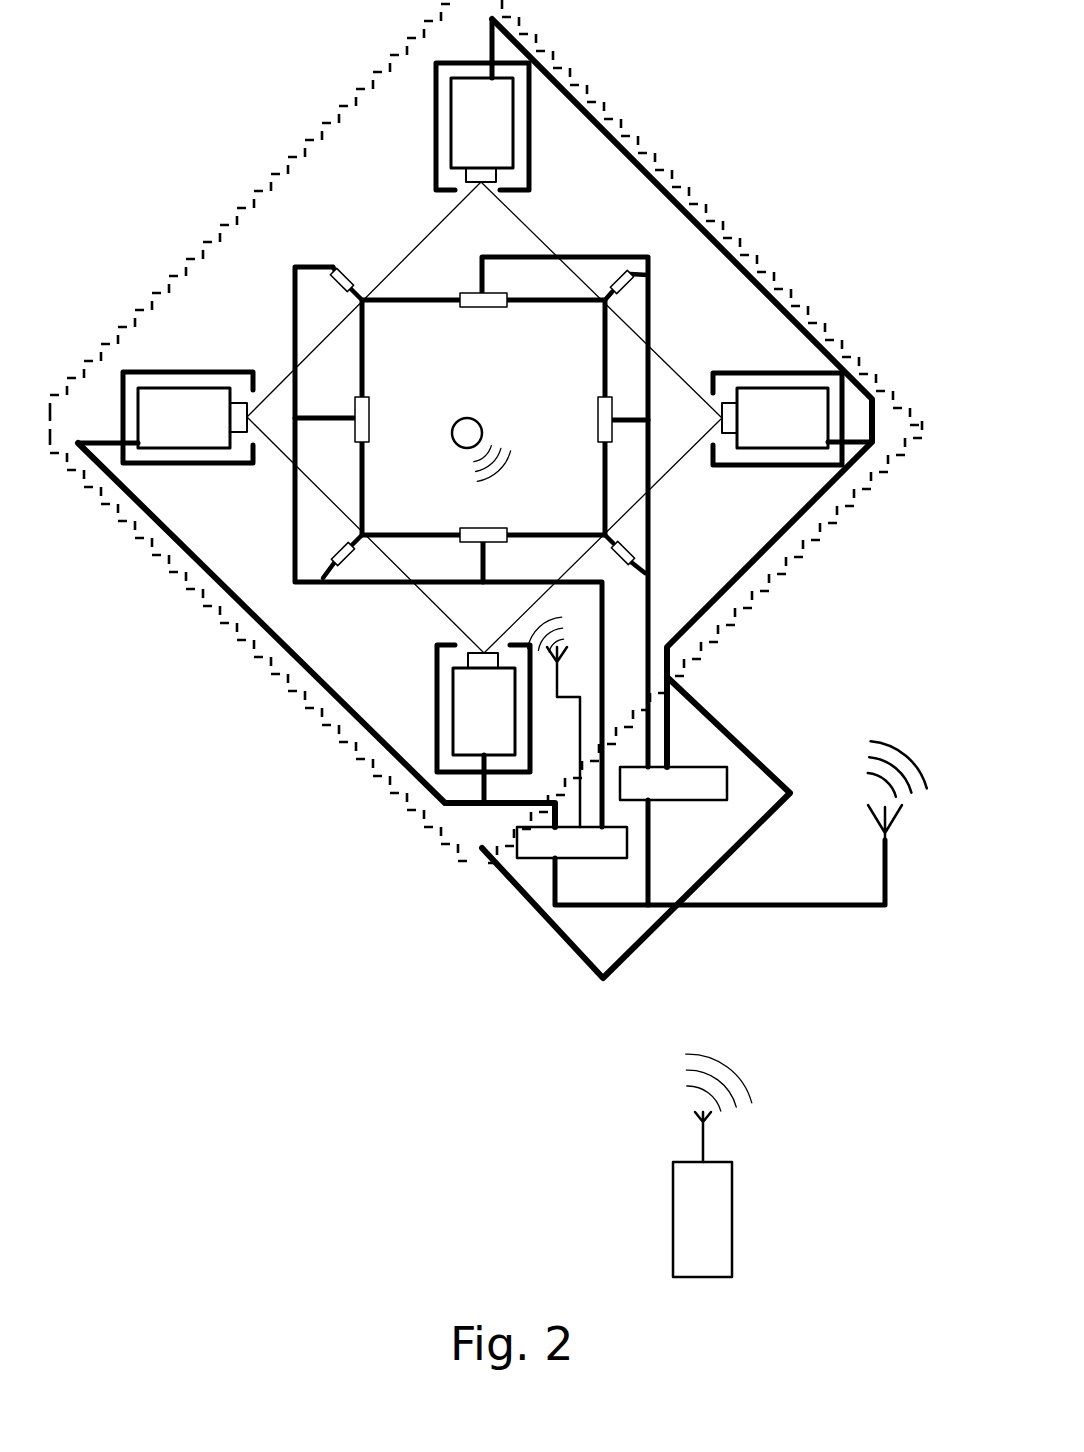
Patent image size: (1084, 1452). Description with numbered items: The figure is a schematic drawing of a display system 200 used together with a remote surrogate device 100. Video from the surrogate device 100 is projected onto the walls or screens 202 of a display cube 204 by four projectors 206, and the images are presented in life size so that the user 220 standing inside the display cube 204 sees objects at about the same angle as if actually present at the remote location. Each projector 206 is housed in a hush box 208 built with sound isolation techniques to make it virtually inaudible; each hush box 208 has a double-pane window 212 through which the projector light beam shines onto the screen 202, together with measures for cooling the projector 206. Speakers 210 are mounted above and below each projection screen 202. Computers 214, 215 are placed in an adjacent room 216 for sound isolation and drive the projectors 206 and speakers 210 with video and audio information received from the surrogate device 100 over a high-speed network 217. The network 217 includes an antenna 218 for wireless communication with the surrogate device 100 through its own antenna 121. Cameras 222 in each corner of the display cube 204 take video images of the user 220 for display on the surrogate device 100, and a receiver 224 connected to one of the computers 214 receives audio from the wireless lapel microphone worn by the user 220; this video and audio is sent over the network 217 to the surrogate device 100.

The surrogate device 100 is at (749, 1178).
The antenna 121 is at (658, 1118).
The display system 200 is at (757, 144).
The projection screen 202 is at (345, 380).
The display cube 204 is at (634, 477).
The projector 206 is at (425, 695).
The hush box 208 is at (417, 753).
The speaker 210 is at (485, 309).
The double-pane window 212 is at (438, 647).
The computer 214 is at (502, 846).
The computer 215 is at (745, 781).
The adjacent room 216 is at (539, 934).
The network 217 is at (771, 914).
The antenna 218 is at (911, 850).
The user 220 is at (430, 430).
The camera 222 is at (322, 287).
The receiver 224 is at (575, 656).